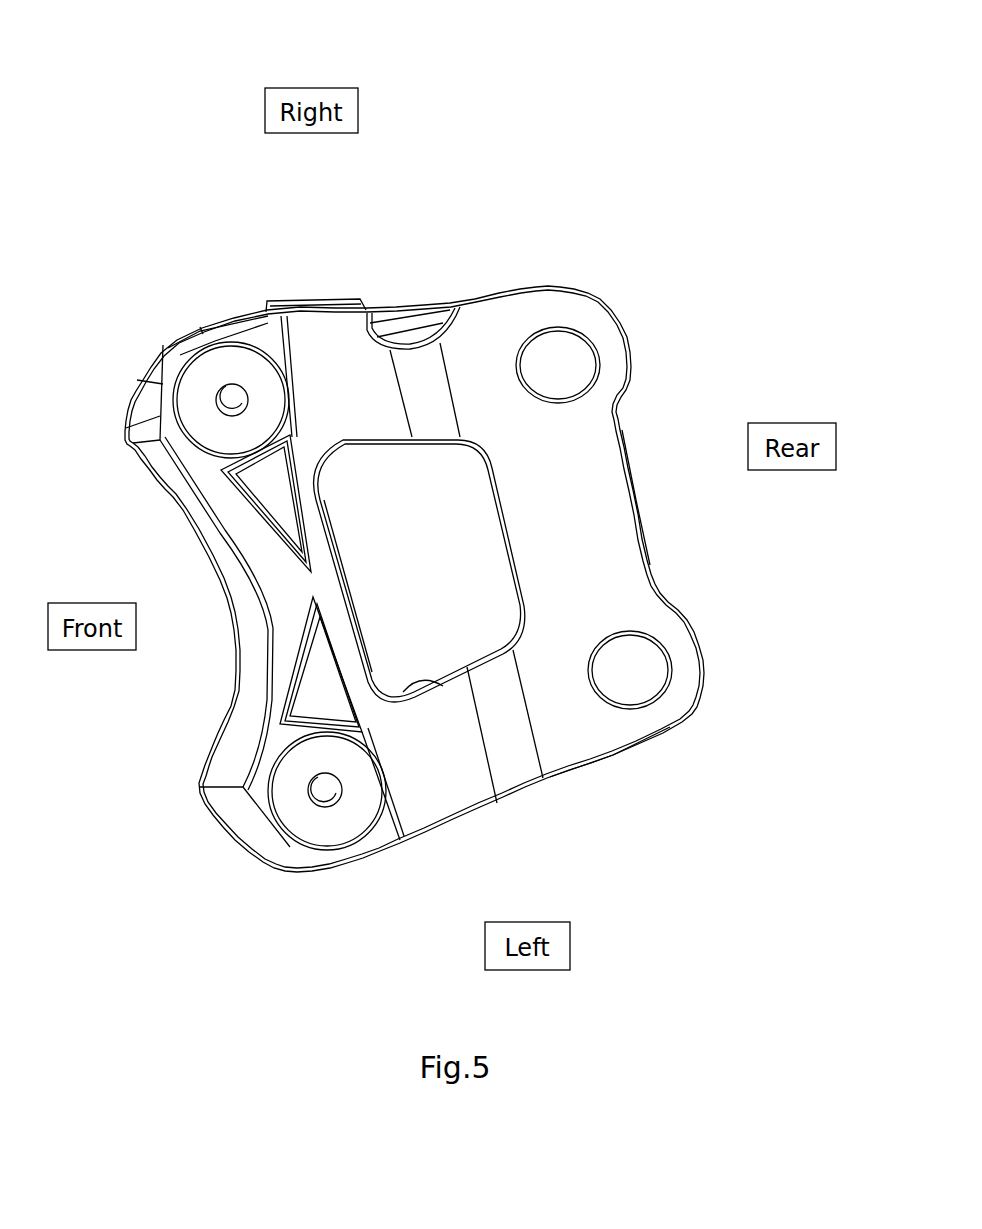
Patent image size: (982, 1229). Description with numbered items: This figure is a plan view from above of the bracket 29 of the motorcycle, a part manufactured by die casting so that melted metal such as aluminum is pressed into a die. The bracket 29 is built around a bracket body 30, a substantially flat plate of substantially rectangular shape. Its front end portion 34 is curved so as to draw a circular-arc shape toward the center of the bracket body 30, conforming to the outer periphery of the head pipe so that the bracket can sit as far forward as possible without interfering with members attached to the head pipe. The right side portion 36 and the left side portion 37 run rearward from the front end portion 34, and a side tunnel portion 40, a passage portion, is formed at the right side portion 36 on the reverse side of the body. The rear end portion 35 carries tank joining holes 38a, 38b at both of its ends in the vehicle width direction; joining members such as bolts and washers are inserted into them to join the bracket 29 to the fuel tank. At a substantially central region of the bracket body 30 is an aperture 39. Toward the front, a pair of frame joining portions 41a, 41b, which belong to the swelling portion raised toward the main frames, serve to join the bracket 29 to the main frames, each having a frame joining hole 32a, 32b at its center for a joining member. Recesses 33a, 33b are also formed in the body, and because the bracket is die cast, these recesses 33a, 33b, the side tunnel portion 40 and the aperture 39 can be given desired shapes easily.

The bracket 29 is at (577, 128).
The bracket body 30 is at (497, 337).
The frame joining hole 32a is at (230, 395).
The frame joining hole 32b is at (323, 782).
The recess 33a is at (277, 500).
The recess 33b is at (312, 698).
The front end portion 34 is at (250, 603).
The rear end portion 35 is at (643, 510).
The right side portion 36 is at (452, 305).
The left side portion 37 is at (587, 770).
The tank joining hole 38a is at (585, 343).
The tank joining hole 38b is at (643, 695).
The aperture 39 is at (425, 785).
The side tunnel portion 40 is at (330, 303).
The frame joining portion 41a is at (253, 360).
The frame joining portion 41b is at (331, 827).